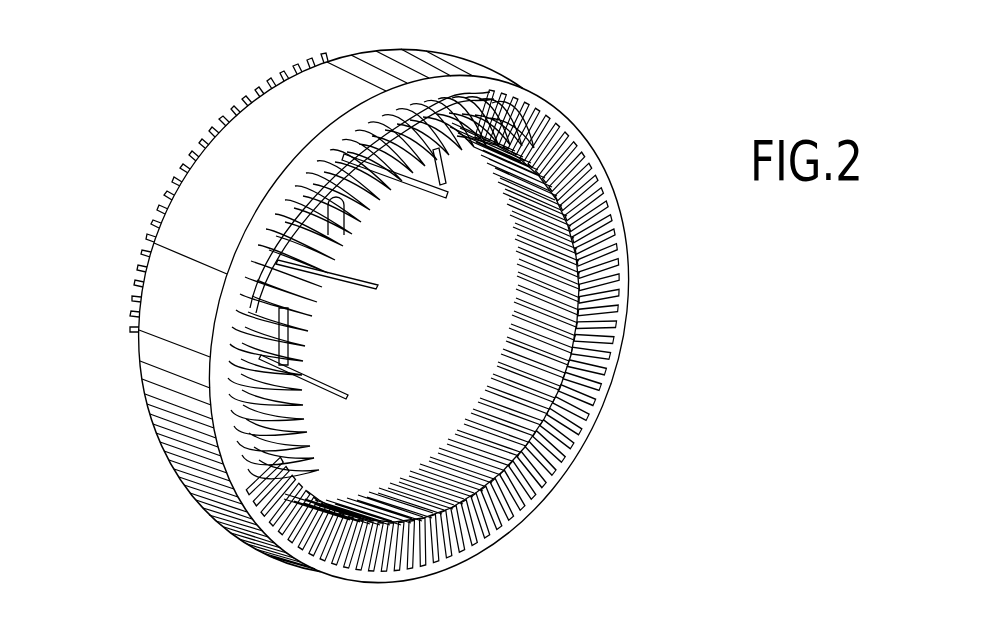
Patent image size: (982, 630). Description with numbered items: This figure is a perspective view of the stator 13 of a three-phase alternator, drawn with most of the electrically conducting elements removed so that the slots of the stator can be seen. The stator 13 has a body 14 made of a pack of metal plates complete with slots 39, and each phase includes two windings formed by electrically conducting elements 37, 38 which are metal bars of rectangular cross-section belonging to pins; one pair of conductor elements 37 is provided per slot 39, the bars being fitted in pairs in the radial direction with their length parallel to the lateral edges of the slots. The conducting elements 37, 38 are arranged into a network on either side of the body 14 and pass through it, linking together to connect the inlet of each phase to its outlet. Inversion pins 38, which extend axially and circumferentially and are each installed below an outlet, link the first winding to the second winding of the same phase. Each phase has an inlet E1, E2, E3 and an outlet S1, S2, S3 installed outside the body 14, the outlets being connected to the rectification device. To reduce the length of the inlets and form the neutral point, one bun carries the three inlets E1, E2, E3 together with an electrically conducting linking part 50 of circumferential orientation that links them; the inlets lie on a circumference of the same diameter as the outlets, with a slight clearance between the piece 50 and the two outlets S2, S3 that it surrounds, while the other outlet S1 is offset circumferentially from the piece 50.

The stator 13 is at (191, 511).
The body 14 is at (153, 433).
The electrically conducting elements 37 is at (262, 447).
The inversion pins 38 is at (413, 160).
The slots 39 is at (607, 350).
The linking part 50 is at (312, 225).
The inlet E1 is at (288, 292).
The inlet E2 is at (346, 200).
The inlet E3 is at (450, 190).
The outlet S1 is at (350, 398).
The outlet S2 is at (370, 284).
The outlet S3 is at (455, 178).